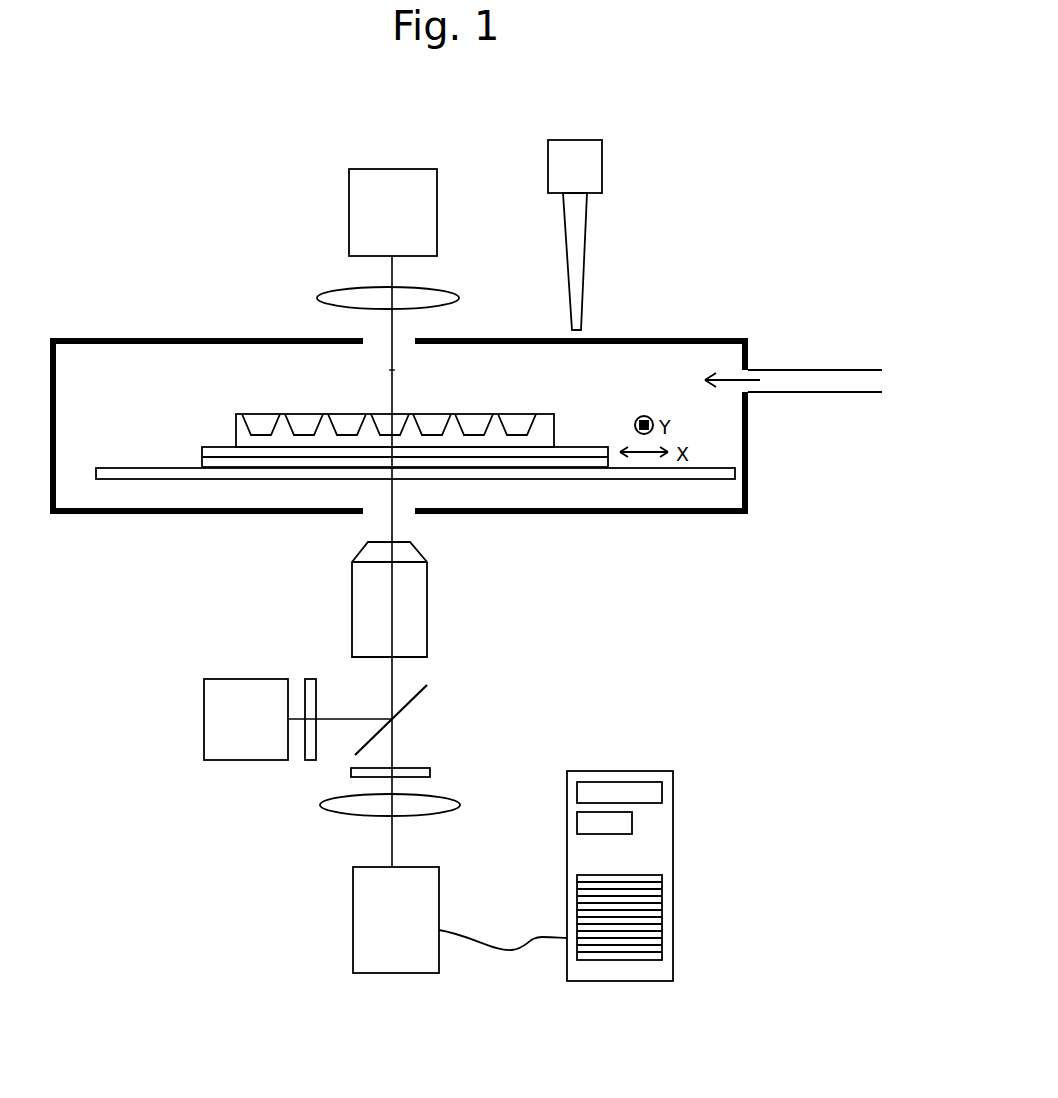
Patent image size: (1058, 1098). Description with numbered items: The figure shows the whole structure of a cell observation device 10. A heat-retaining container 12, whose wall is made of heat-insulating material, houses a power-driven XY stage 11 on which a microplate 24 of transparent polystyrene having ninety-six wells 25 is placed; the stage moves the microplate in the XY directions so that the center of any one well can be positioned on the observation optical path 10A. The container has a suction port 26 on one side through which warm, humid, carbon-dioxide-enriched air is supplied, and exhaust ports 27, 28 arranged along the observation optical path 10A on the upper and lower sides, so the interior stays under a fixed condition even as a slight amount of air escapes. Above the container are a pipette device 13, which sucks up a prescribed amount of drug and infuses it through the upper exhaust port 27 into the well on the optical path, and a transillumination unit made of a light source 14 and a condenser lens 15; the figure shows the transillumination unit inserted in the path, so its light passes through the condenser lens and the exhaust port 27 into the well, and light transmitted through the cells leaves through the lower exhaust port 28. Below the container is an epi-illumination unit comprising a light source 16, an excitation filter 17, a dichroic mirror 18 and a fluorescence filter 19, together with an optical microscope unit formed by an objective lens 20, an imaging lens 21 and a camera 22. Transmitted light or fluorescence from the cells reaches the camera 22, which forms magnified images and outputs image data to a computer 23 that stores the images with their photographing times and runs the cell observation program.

The cell observation device 10 is at (128, 127).
The observation optical path 10A is at (392, 370).
The power-driven XY stage 11 is at (185, 457).
The heat-retaining container 12 is at (119, 338).
The pipette device 13 is at (580, 240).
The light source 14 is at (350, 203).
The condenser lens 15 is at (335, 295).
The light source 16 is at (243, 682).
The excitation filter 17 is at (309, 680).
The dichroic mirror 18 is at (417, 698).
The fluorescence filter 19 is at (430, 772).
The objective lens 20 is at (423, 606).
The imaging lens 21 is at (322, 803).
The camera 22 is at (358, 903).
The computer 23 is at (667, 837).
The microplate 24 is at (543, 420).
The wells 25 is at (477, 418).
The suction port 26 is at (803, 375).
The exhaust port 27 is at (402, 337).
The exhaust port 28 is at (406, 516).